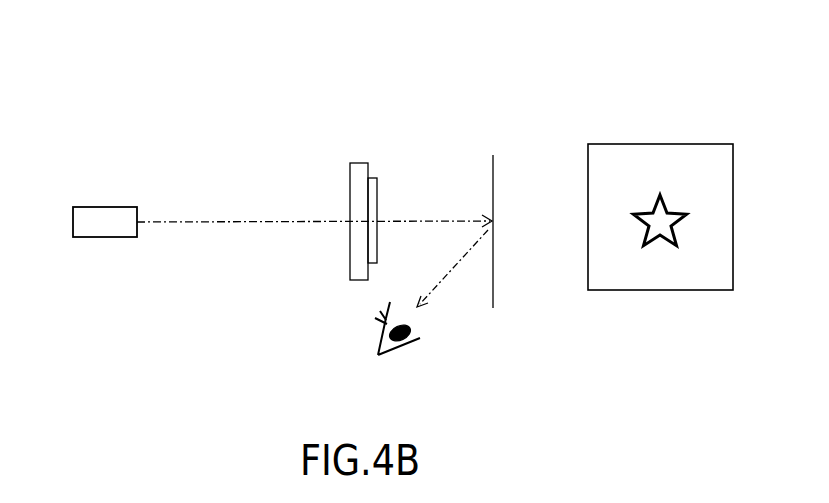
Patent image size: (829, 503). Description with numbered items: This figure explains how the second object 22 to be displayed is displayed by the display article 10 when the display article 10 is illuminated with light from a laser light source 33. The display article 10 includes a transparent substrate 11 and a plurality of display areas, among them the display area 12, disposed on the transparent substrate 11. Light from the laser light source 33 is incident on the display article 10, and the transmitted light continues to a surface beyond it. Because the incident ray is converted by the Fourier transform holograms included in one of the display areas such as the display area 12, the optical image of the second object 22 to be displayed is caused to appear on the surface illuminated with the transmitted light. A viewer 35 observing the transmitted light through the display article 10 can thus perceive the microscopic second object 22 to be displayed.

The display article 10 is at (418, 202).
The transparent substrate 11 is at (355, 267).
The display area 12 is at (372, 190).
The second object to be displayed 22 is at (619, 224).
The laser light source 33 is at (110, 213).
The viewer 35 is at (375, 337).